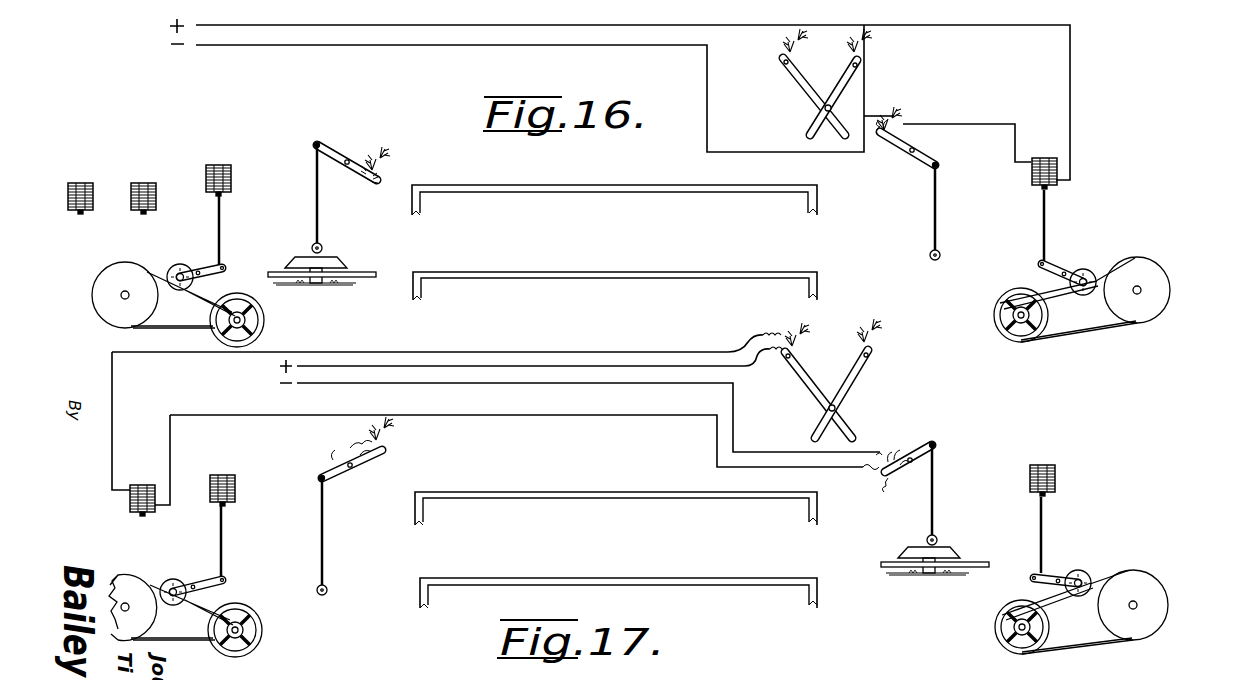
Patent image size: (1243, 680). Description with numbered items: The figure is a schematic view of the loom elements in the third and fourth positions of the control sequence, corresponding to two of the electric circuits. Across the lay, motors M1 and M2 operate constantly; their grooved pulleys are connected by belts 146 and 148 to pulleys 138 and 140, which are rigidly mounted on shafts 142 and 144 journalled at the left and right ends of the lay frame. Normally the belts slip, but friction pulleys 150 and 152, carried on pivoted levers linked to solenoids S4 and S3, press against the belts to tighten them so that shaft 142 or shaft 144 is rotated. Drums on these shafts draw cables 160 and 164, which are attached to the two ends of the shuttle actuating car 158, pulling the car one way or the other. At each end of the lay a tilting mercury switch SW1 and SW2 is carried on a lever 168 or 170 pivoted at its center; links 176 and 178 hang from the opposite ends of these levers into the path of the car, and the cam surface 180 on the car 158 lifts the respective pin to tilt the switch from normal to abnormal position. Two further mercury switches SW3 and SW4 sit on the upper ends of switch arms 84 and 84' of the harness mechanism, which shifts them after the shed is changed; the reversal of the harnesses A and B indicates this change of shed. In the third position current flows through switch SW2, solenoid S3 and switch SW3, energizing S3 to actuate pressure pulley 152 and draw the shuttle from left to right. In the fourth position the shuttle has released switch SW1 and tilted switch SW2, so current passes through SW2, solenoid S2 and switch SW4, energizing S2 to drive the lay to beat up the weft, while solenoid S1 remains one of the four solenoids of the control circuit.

In FIG. 16, the switch arm 84 is at (871, 88).
In FIG. 17, the switch arm 84 is at (877, 387).
In FIG. 16, the switch arm 84' is at (788, 89).
In FIG. 17, the switch arm 84' is at (793, 394).
In FIG. 16, the pulley 138 is at (122, 272).
In FIG. 17, the pulley 138 is at (136, 583).
In FIG. 16, the pulley 140 is at (1144, 275).
In FIG. 17, the pulley 140 is at (1140, 582).
In FIG. 16, the shaft 142 is at (122, 292).
In FIG. 17, the shaft 142 is at (125, 602).
In FIG. 16, the shaft 144 is at (1141, 288).
In FIG. 17, the shaft 144 is at (1137, 604).
In FIG. 16, the belt 146 is at (198, 334).
In FIG. 17, the belt 146 is at (220, 599).
In FIG. 16, the belt 148 is at (1086, 333).
In FIG. 17, the belt 148 is at (1088, 648).
In FIG. 16, the friction pulley 150 is at (178, 266).
In FIG. 17, the friction pulley 150 is at (186, 572).
In FIG. 16, the friction pulley 152 is at (1088, 272).
In FIG. 17, the friction pulley 152 is at (1088, 573).
In FIG. 16, the shuttle actuating car 158 is at (326, 263).
In FIG. 17, the shuttle actuating car 158 is at (945, 551).
In FIG. 16, the cable 160 is at (288, 288).
In FIG. 17, the cable 160 is at (896, 586).
In FIG. 16, the cable 164 is at (343, 288).
In FIG. 17, the cable 164 is at (944, 586).
In FIG. 16, the lever 168 is at (330, 160).
In FIG. 17, the lever 168 is at (350, 476).
In FIG. 16, the lever 170 is at (908, 160).
In FIG. 17, the lever 170 is at (924, 468).
In FIG. 16, the link 176 is at (315, 195).
In FIG. 17, the link 176 is at (321, 528).
In FIG. 16, the link 178 is at (938, 214).
In FIG. 17, the link 178 is at (939, 501).
In FIG. 16, the cam surface 180 is at (290, 261).
In FIG. 17, the cam surface 180 is at (959, 552).
In FIG. 16, the motor M1 is at (260, 321).
In FIG. 17, the motor M1 is at (262, 632).
In FIG. 16, the motor M2 is at (990, 304).
In FIG. 17, the motor M2 is at (996, 632).
In FIG. 16, the solenoid S1 is at (88, 184).
In FIG. 16, the solenoid S2 is at (152, 184).
In FIG. 16, the solenoid S3 is at (1042, 156).
In FIG. 17, the solenoid S3 is at (1048, 438).
In FIG. 16, the solenoid S4 is at (224, 147).
In FIG. 17, the solenoid S4 is at (226, 458).
In FIG. 16, the mercury switch SW1 is at (353, 150).
In FIG. 17, the mercury switch SW1 is at (348, 449).
In FIG. 16, the mercury switch SW2 is at (906, 137).
In FIG. 17, the mercury switch SW2 is at (896, 450).
In FIG. 16, the mercury switch SW3 is at (866, 81).
In FIG. 17, the mercury switch SW3 is at (874, 342).
In FIG. 16, the mercury switch SW4 is at (789, 80).
In FIG. 17, the mercury switch SW4 is at (787, 332).
In FIG. 16, the harness A is at (602, 290).
In FIG. 17, the harness A is at (603, 598).
In FIG. 16, the harness B is at (602, 203).
In FIG. 17, the harness B is at (601, 510).